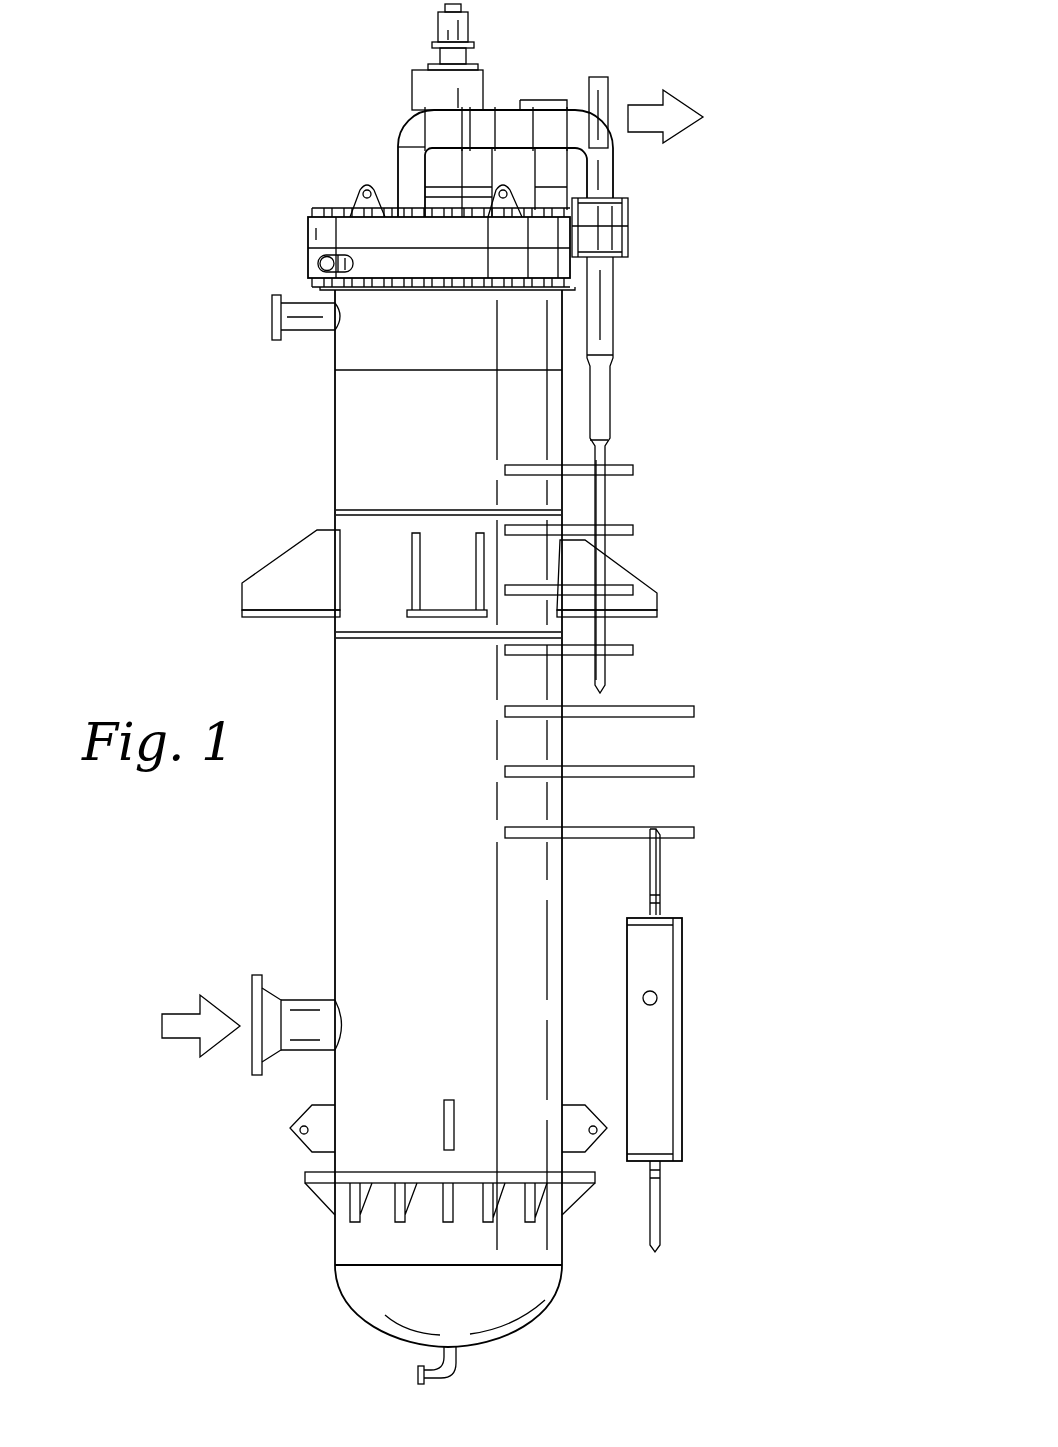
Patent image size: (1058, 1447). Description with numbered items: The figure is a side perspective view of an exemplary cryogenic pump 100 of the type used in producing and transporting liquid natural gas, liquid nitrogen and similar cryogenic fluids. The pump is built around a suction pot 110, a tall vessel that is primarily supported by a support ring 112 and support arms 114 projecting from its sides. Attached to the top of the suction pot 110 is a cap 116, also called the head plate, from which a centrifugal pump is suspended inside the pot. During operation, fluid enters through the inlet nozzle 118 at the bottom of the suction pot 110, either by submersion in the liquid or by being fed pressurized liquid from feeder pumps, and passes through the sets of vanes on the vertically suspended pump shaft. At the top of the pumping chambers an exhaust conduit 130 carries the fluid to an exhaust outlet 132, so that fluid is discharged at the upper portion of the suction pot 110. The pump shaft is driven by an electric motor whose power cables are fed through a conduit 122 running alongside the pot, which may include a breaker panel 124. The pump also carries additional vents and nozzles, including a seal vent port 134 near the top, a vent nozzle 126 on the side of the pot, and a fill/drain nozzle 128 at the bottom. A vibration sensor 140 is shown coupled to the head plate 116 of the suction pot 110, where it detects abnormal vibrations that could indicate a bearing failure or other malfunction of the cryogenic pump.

The cryogenic pump 100 is at (772, 210).
The suction pot 110 is at (335, 847).
The support ring 112 is at (378, 600).
The support arms 114 is at (478, 565).
The cap 116 is at (327, 232).
The inlet nozzle 118 is at (305, 1020).
The conduit 122 is at (615, 500).
The breaker panel 124 is at (660, 1052).
The vent nozzle 126 is at (305, 318).
The fill/drain nozzle 128 is at (425, 1366).
The exhaust conduit 130 is at (548, 100).
The exhaust outlet 132 is at (603, 88).
The seal vent port 134 is at (405, 133).
The vibration sensor 140 is at (300, 258).